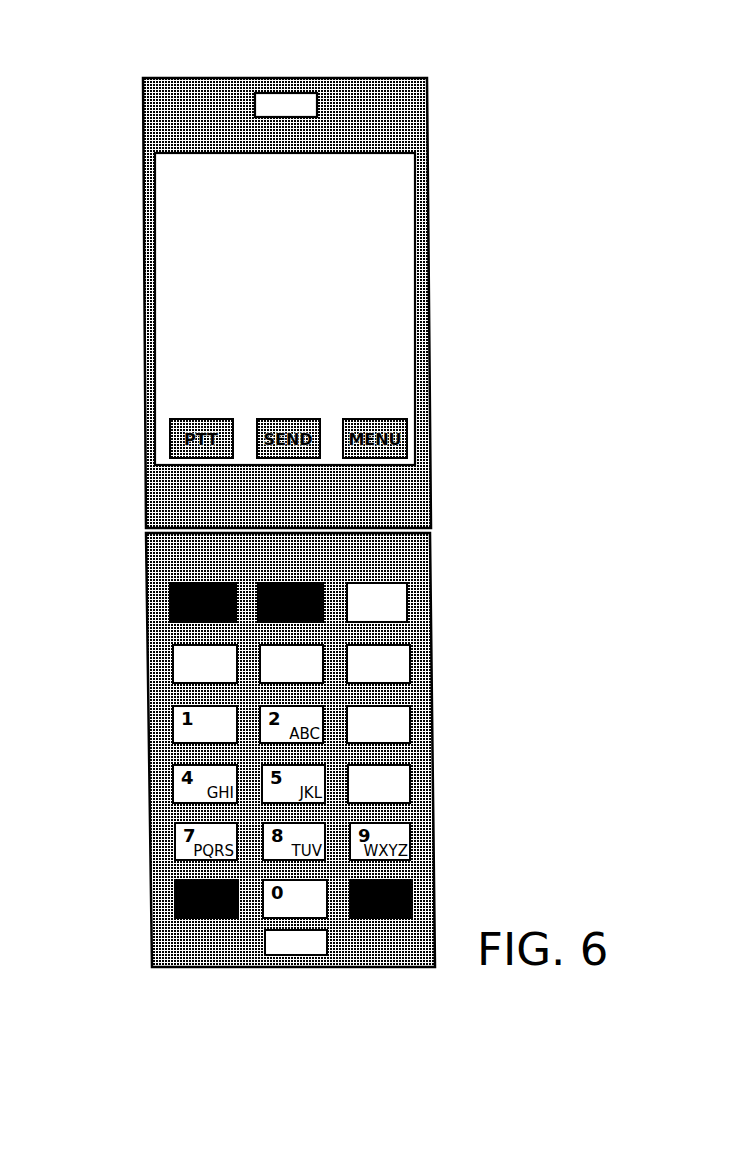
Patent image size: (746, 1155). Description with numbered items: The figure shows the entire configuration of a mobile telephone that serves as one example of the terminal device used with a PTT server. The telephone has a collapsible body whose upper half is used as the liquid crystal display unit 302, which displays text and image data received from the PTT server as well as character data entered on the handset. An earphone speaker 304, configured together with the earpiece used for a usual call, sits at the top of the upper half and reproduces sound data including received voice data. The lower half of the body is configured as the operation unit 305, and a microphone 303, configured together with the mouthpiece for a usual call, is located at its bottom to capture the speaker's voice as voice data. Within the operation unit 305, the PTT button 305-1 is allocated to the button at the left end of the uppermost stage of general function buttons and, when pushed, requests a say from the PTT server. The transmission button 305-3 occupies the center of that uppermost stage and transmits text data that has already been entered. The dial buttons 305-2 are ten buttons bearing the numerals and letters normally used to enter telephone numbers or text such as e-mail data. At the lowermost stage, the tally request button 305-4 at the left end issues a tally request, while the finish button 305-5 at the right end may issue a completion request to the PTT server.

The liquid crystal display unit 302 is at (423, 162).
The microphone 303 is at (328, 953).
The earphone speaker 304 is at (317, 97).
The operation unit 305 is at (433, 543).
The PTT button 305-1 is at (165, 592).
The dial buttons 305-2 is at (411, 708).
The transmission button 305-3 is at (258, 592).
The tally request button 305-4 is at (173, 890).
The finish button 305-5 is at (413, 896).